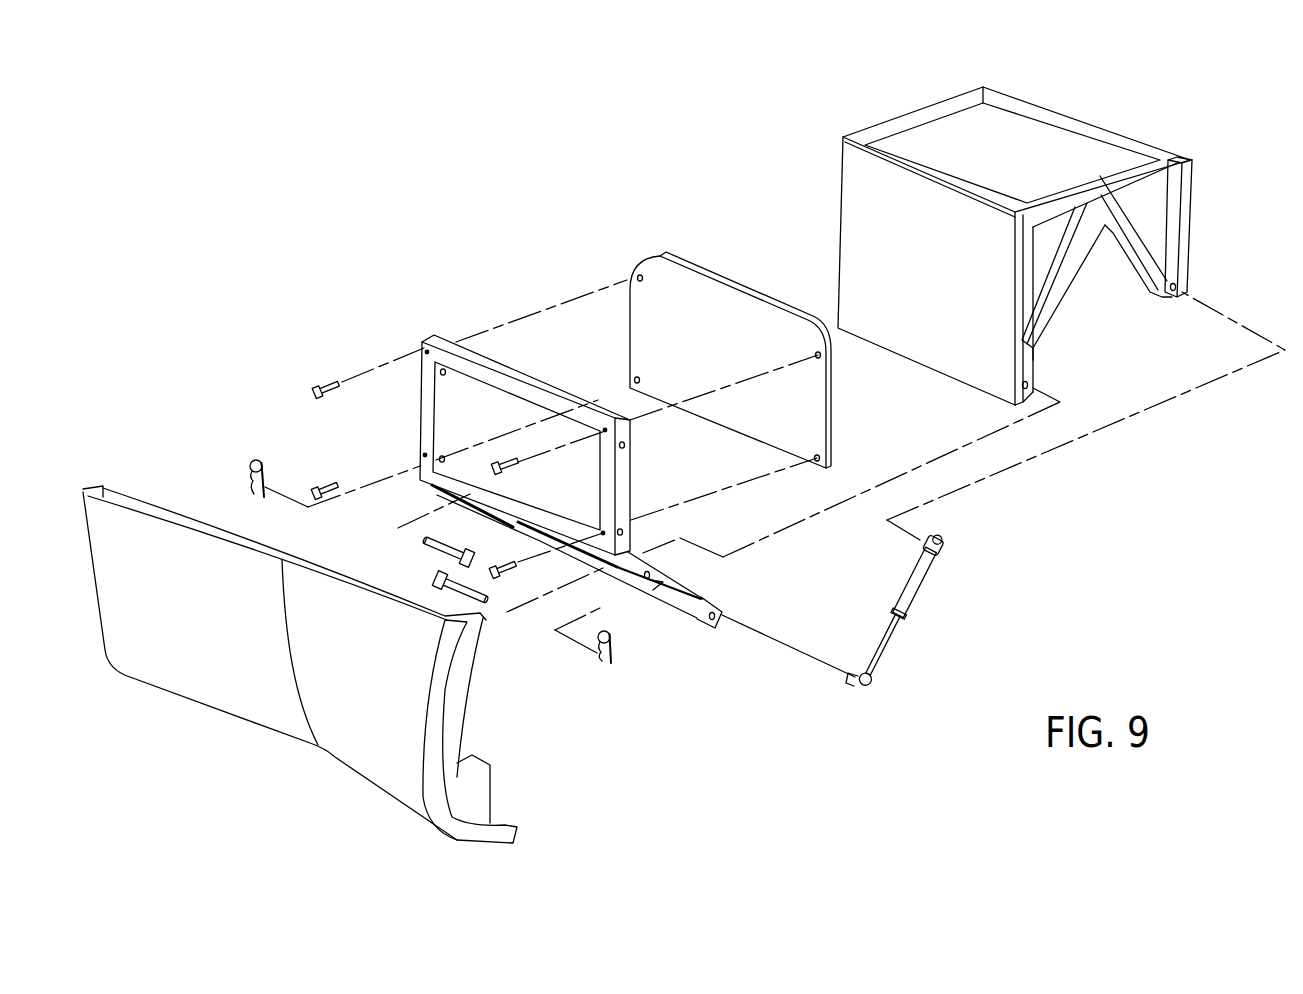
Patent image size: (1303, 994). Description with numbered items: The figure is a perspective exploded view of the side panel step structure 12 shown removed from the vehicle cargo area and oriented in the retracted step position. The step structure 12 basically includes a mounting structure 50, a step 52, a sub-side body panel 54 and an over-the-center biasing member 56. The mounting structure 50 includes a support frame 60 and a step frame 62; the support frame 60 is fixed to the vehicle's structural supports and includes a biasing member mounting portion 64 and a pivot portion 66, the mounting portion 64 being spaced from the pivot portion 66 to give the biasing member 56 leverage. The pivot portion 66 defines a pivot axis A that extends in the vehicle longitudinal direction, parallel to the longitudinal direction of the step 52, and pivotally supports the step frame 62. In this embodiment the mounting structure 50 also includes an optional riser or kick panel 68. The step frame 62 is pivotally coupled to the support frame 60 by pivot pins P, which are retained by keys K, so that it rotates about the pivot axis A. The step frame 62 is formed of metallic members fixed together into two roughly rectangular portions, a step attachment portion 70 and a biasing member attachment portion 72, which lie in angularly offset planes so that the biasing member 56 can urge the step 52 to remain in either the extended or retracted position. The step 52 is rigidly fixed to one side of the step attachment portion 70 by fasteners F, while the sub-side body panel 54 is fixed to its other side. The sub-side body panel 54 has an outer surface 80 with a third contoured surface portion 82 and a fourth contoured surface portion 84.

The side panel step structure 12 is at (377, 222).
The mounting structure 50 is at (635, 197).
The step 52 is at (730, 332).
The sub-side body panel 54 is at (300, 640).
The over-the-center biasing member 56 is at (912, 585).
The support frame 60 is at (921, 246).
The step frame 62 is at (586, 437).
The biasing member mounting portion 64 is at (1183, 282).
The pivot portion 66 is at (1033, 367).
The kick panel 68 is at (935, 323).
The step attachment portion 70 is at (507, 372).
The biasing member attachment portion 72 is at (697, 590).
The outer surface 80 is at (232, 570).
The third contoured surface portion 82 is at (358, 618).
The fourth contoured surface portion 84 is at (273, 578).
The pivot axis A is at (1060, 402).
The fasteners F is at (322, 485).
The keys K is at (265, 467).
The pivot pins P is at (442, 580).